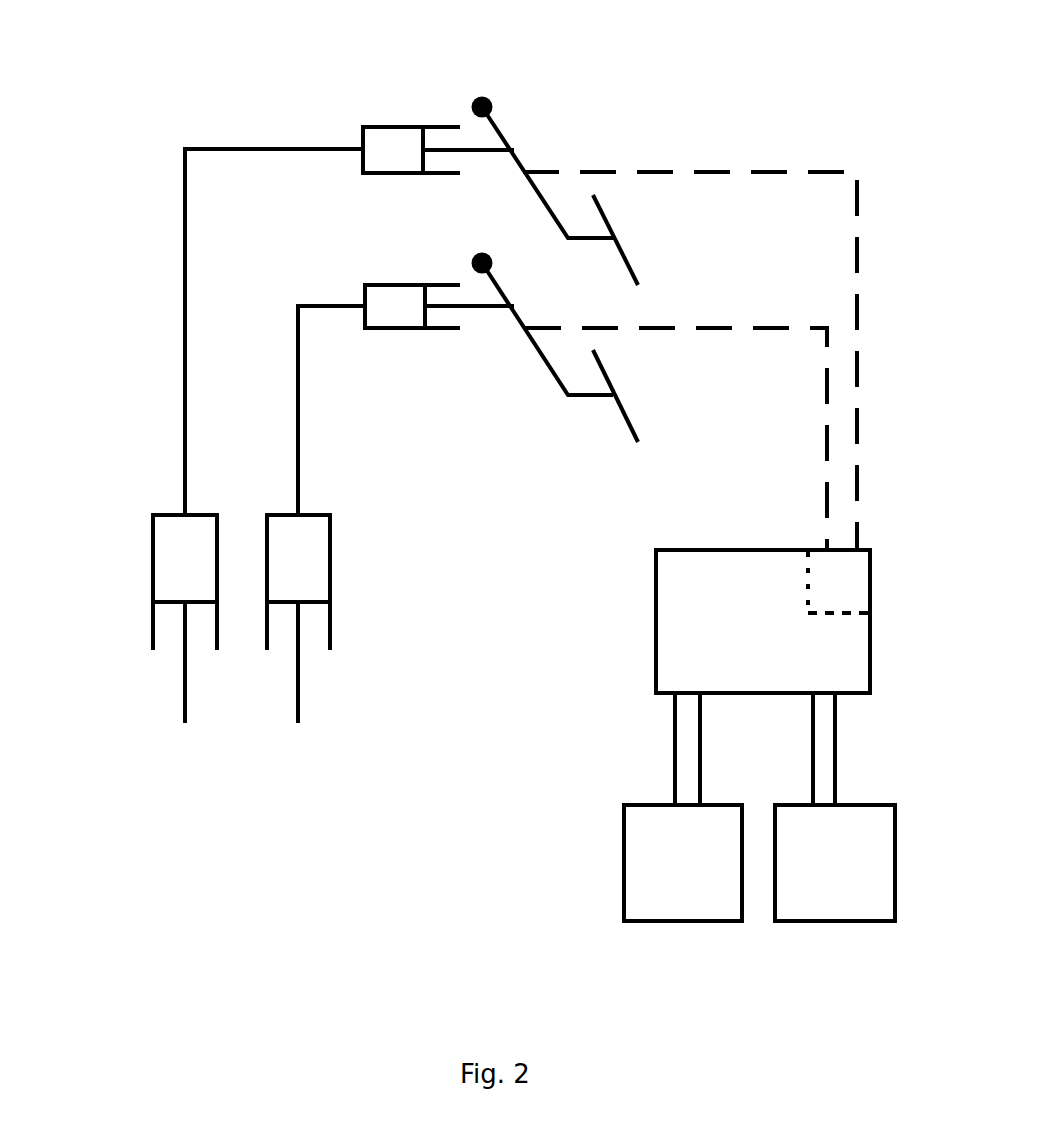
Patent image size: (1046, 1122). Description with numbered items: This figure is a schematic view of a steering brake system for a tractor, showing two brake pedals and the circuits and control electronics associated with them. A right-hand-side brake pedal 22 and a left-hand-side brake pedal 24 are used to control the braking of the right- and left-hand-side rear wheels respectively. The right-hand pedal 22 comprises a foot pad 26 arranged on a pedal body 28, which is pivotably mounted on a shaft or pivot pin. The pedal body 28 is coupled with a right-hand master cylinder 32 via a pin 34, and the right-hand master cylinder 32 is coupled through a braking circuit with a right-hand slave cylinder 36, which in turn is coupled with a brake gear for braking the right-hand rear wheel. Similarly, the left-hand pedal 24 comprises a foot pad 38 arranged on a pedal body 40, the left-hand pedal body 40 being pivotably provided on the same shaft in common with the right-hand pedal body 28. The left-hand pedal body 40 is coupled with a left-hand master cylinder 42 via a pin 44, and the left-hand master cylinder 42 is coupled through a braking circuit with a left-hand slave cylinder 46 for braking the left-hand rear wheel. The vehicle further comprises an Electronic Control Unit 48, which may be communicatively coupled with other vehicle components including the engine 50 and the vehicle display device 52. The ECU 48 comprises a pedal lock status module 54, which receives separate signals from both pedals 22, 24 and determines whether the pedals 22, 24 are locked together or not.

The right-hand-side brake pedal 22 is at (640, 130).
The left-hand-side brake pedal 24 is at (537, 505).
The foot pad 26 is at (633, 268).
The pedal body 28 is at (522, 155).
The right-hand master cylinder 32 is at (388, 158).
The pin 34 is at (465, 150).
The right-hand slave cylinder 36 is at (187, 583).
The foot pad 38 is at (627, 423).
The pedal body 40 is at (553, 378).
The left-hand master cylinder 42 is at (387, 300).
The pin 44 is at (477, 307).
The left-hand slave cylinder 46 is at (298, 580).
The Electronic Control Unit (ECU) 48 is at (697, 628).
The engine 50 is at (697, 897).
The vehicle display device 52 is at (813, 897).
The pedal lock status module 54 is at (840, 582).